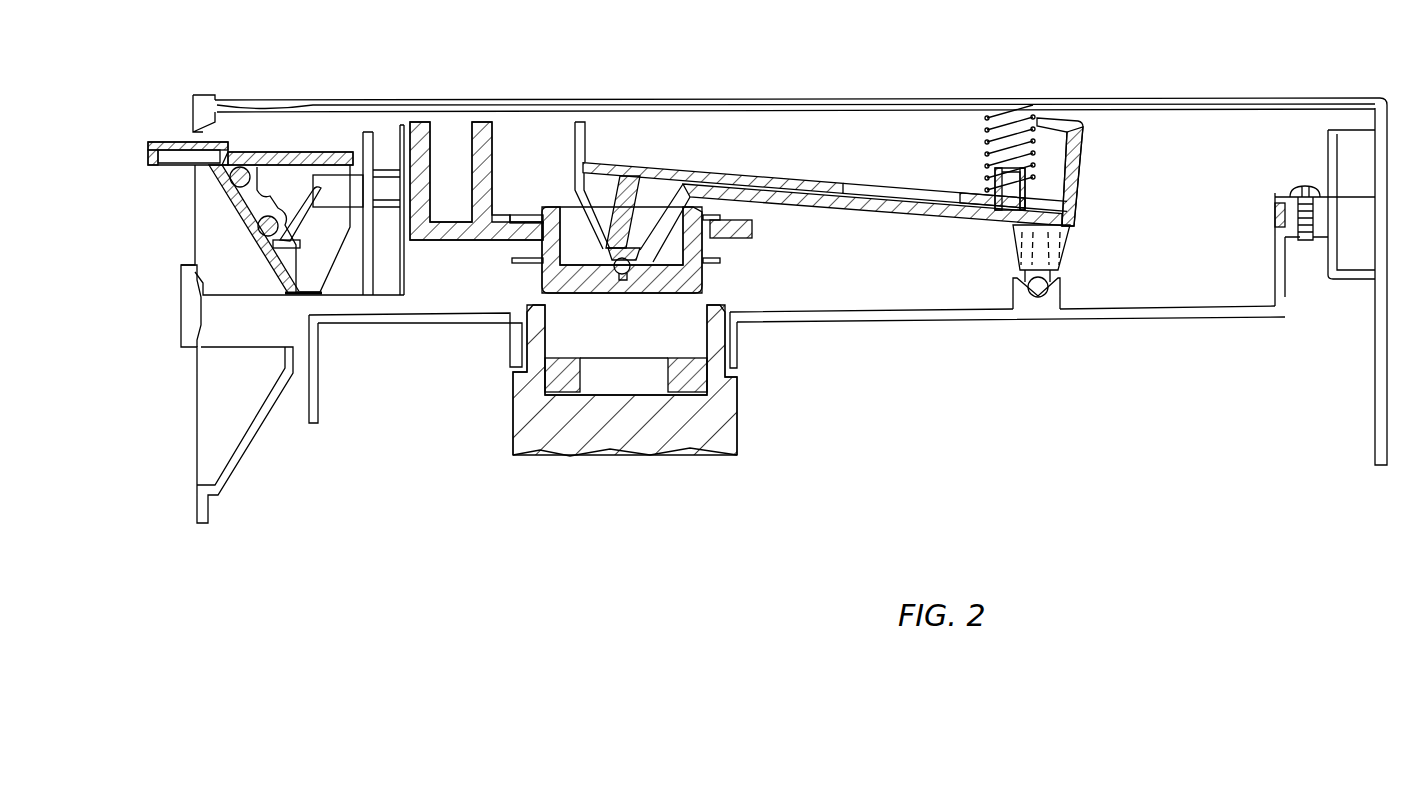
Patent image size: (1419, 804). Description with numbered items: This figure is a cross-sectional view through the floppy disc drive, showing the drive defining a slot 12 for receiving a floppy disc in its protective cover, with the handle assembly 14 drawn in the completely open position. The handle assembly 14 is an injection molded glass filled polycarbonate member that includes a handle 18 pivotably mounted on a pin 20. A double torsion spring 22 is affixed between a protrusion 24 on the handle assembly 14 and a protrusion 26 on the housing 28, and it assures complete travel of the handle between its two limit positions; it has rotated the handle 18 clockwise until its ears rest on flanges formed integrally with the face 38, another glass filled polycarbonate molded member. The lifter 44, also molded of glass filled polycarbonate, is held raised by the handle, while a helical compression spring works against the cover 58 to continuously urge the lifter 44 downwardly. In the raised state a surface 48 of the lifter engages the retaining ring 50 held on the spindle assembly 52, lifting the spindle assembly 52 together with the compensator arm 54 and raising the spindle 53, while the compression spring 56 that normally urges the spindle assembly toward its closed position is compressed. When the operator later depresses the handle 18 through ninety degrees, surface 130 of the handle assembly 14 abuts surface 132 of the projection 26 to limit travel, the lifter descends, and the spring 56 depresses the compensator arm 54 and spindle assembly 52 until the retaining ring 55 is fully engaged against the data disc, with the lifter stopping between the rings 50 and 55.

The slot 12 is at (190, 309).
The handle assembly 14 is at (162, 223).
The handle 18 is at (148, 147).
The pin 20 is at (272, 212).
The double torsion spring 22 is at (303, 223).
The protrusion 24 is at (280, 248).
The protrusion 26 is at (313, 182).
The housing 28 is at (363, 135).
The face 38 is at (205, 93).
The lifter 44 is at (493, 142).
The surface 48 is at (502, 222).
The retaining ring 50 is at (507, 217).
The spindle assembly 52 is at (605, 95).
The spindle 53 is at (543, 242).
The compensator arm 54 is at (630, 133).
The retaining ring 55 is at (513, 264).
The compression spring 56 is at (987, 130).
The cover 58 is at (418, 110).
The surface 130 is at (297, 297).
The surface 132 is at (343, 203).